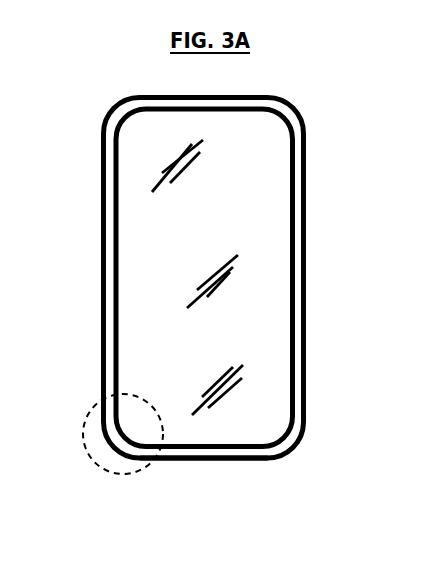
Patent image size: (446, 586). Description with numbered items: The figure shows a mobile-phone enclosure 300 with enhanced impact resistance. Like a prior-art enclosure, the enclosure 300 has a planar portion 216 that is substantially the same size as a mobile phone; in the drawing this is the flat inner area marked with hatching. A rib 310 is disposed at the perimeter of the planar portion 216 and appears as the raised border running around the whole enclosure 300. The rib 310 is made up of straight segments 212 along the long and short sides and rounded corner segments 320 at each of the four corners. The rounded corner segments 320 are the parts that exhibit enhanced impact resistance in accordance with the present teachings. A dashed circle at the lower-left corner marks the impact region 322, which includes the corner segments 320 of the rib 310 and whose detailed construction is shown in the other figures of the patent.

The mobile-phone enclosure 300 is at (238, 295).
The rib 310 is at (307, 283).
The straight segments 212 is at (298, 341).
The planar portion 216 is at (197, 240).
The rounded corner segments 320 is at (299, 445).
The impact region 322 is at (88, 451).